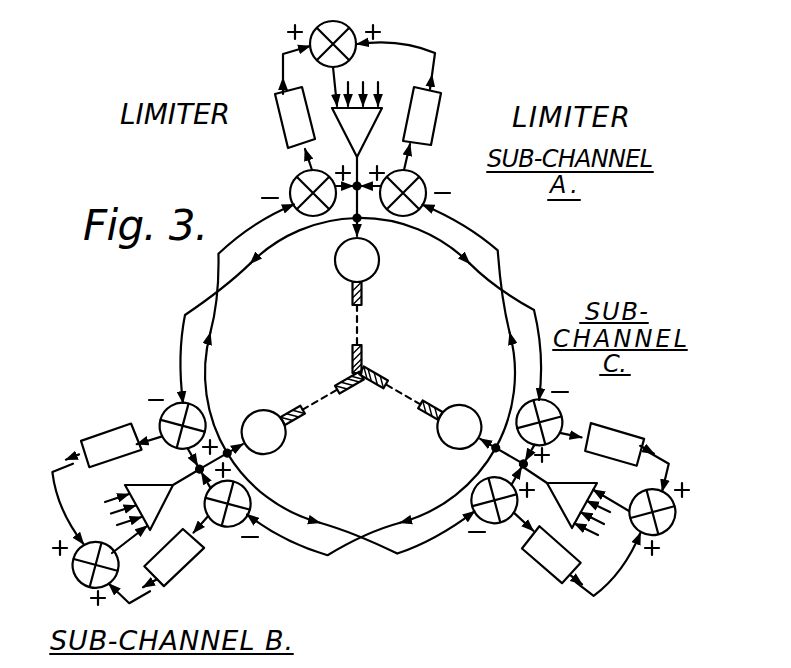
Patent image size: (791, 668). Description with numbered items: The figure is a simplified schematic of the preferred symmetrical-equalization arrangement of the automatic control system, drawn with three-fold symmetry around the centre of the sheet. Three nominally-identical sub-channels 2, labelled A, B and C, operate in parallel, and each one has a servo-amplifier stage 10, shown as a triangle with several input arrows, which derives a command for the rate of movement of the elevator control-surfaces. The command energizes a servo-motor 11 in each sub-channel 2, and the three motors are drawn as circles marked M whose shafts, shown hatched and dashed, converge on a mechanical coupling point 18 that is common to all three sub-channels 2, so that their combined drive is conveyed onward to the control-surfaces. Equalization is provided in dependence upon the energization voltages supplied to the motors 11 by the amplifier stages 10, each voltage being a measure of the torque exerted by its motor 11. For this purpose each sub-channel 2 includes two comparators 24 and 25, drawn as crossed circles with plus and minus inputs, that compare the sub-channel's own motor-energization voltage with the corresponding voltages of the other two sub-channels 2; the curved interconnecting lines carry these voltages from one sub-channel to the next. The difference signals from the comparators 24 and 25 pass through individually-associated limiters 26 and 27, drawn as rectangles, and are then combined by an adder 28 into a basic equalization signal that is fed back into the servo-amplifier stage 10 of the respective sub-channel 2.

The sub-channel 2 is at (389, 346).
The servo-amplifier stage 10 is at (390, 128).
The servo-motor 11 is at (379, 270).
The mechanical coupling point 18 is at (362, 384).
The comparator 24 is at (297, 177).
The comparator 25 is at (420, 177).
The limiter 26 is at (280, 117).
The limiter 27 is at (437, 117).
The adder 28 is at (282, 62).